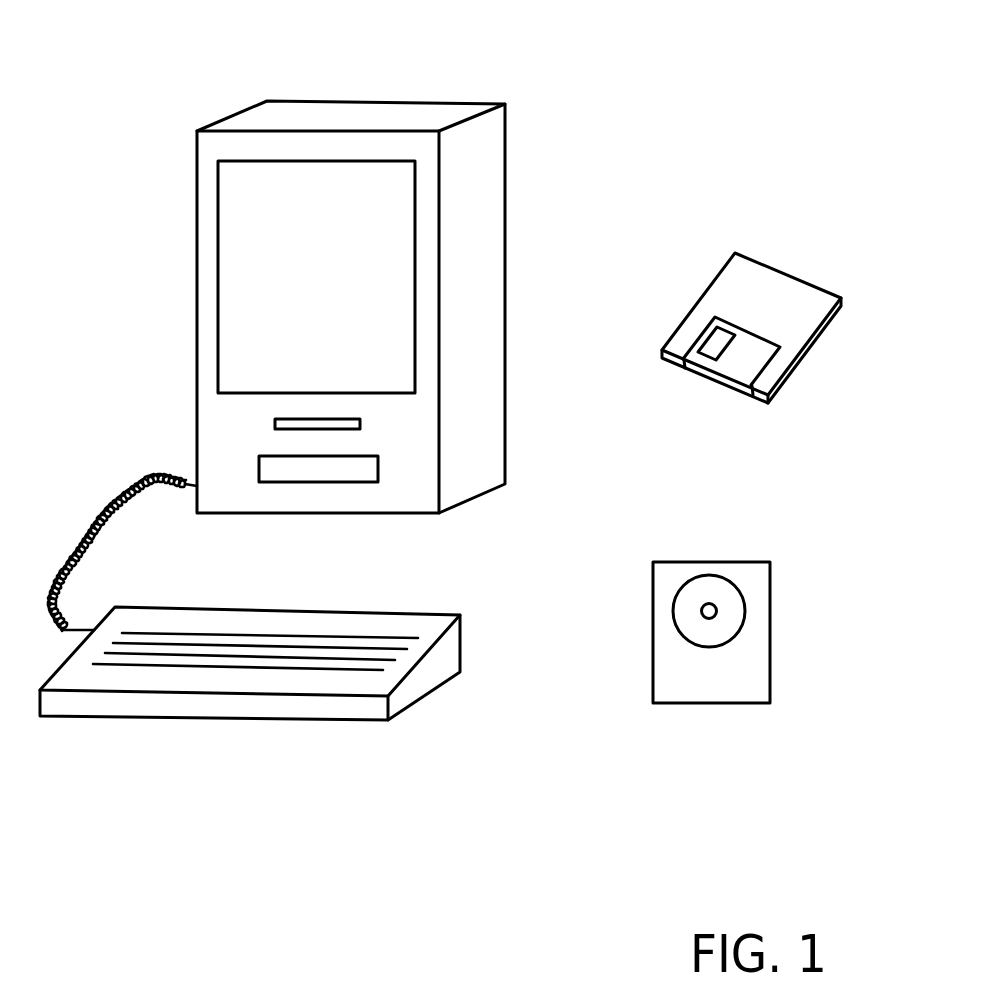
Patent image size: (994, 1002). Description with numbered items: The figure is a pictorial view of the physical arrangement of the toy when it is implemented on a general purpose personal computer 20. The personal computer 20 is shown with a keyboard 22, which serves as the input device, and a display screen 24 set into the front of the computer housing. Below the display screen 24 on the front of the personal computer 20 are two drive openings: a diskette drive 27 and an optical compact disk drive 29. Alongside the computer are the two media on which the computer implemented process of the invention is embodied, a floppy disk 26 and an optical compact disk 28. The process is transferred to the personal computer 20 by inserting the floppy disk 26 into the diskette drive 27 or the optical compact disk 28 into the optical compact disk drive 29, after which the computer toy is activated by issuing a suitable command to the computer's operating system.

The personal computer 20 is at (317, 292).
The keyboard 22 is at (108, 678).
The display screen 24 is at (243, 262).
The floppy disk 26 is at (767, 288).
The diskette drive 27 is at (320, 422).
The optical compact disk 28 is at (755, 621).
The optical compact disk drive 29 is at (315, 471).